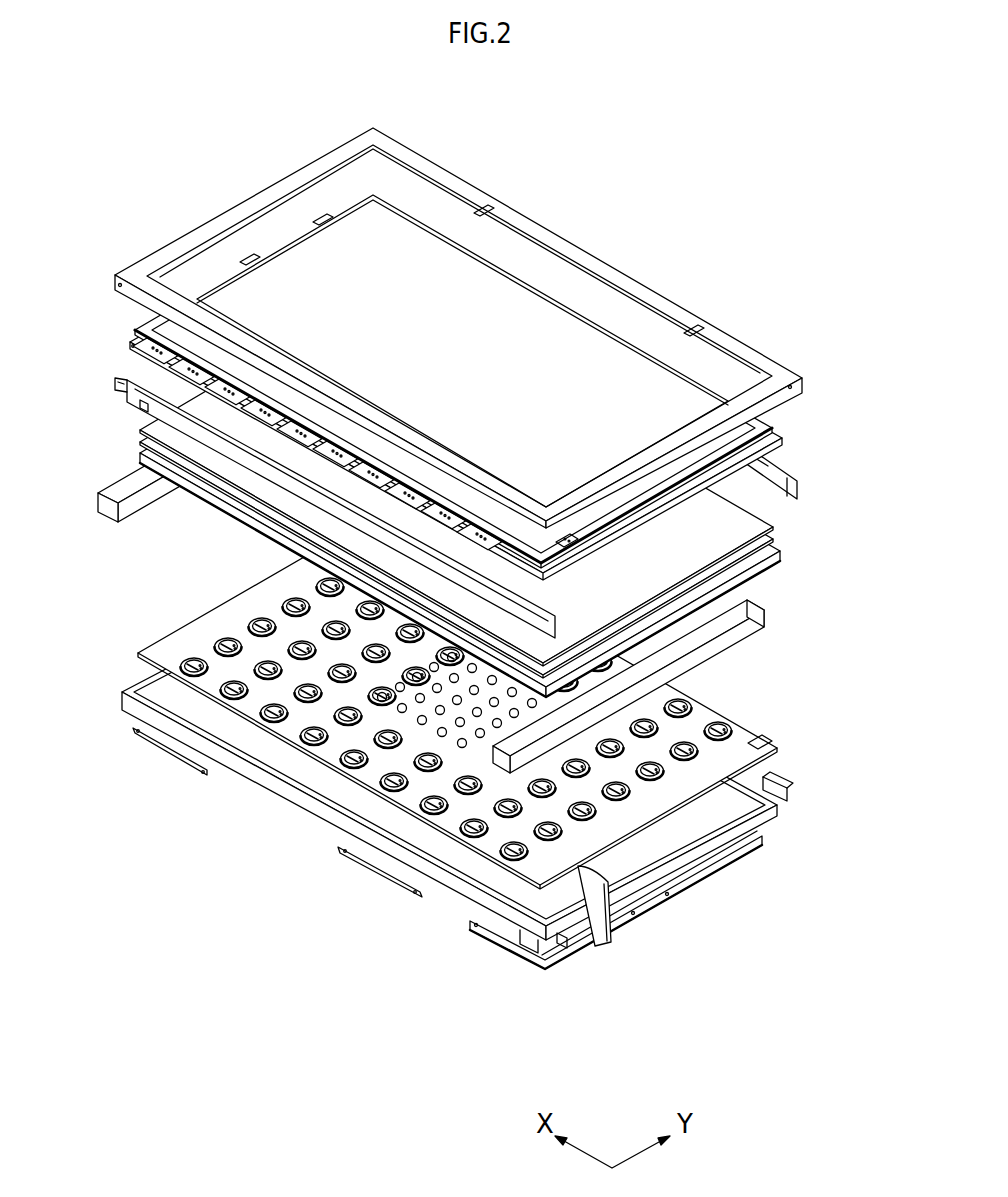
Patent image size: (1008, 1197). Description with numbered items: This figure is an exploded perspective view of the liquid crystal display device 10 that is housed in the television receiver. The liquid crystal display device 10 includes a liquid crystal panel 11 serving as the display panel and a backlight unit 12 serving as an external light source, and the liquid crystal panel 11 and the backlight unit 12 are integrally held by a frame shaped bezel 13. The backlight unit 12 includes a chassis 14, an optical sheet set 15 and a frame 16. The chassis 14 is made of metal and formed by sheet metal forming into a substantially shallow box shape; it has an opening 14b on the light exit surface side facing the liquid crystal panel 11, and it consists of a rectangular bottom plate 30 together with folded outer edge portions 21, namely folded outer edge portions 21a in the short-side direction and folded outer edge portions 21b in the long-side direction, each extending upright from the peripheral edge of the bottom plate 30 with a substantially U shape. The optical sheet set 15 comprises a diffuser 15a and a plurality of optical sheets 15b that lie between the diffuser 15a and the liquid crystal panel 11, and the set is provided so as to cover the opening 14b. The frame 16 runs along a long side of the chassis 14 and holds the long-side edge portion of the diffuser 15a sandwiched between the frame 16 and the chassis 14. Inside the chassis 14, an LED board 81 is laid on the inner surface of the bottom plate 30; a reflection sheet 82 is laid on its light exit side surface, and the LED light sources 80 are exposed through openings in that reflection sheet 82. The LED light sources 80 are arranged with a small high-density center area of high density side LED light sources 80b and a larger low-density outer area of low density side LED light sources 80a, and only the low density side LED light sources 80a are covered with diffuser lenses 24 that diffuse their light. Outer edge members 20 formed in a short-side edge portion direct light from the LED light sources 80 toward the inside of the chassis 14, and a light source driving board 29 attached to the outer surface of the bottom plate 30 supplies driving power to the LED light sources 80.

The liquid crystal display device 10 is at (469, 595).
The liquid crystal panel 11 is at (292, 243).
The backlight unit 12 is at (777, 827).
The bezel 13 is at (647, 285).
The chassis 14 is at (180, 720).
The opening 14b is at (750, 787).
The optical sheet set 15 is at (508, 495).
The diffuser 15a is at (768, 560).
The optical sheets 15b is at (778, 521).
The frame 16 is at (153, 413).
The outer edge members 20 is at (115, 490).
The folded outer edge portions 21 is at (553, 1003).
The folded outer edge portions in a short-side direction 21a is at (563, 942).
The folded outer edge portions in a long-side direction 21b is at (521, 940).
The diffuser lenses 24 is at (684, 702).
The light source driving board 29 is at (690, 875).
The bottom plate 30 is at (275, 752).
The LED light sources 80 is at (456, 781).
The low density side LED light sources 80a is at (413, 803).
The high density side LED light sources 80b is at (438, 731).
The LED board 81 is at (477, 850).
The reflection sheet 82 is at (750, 748).